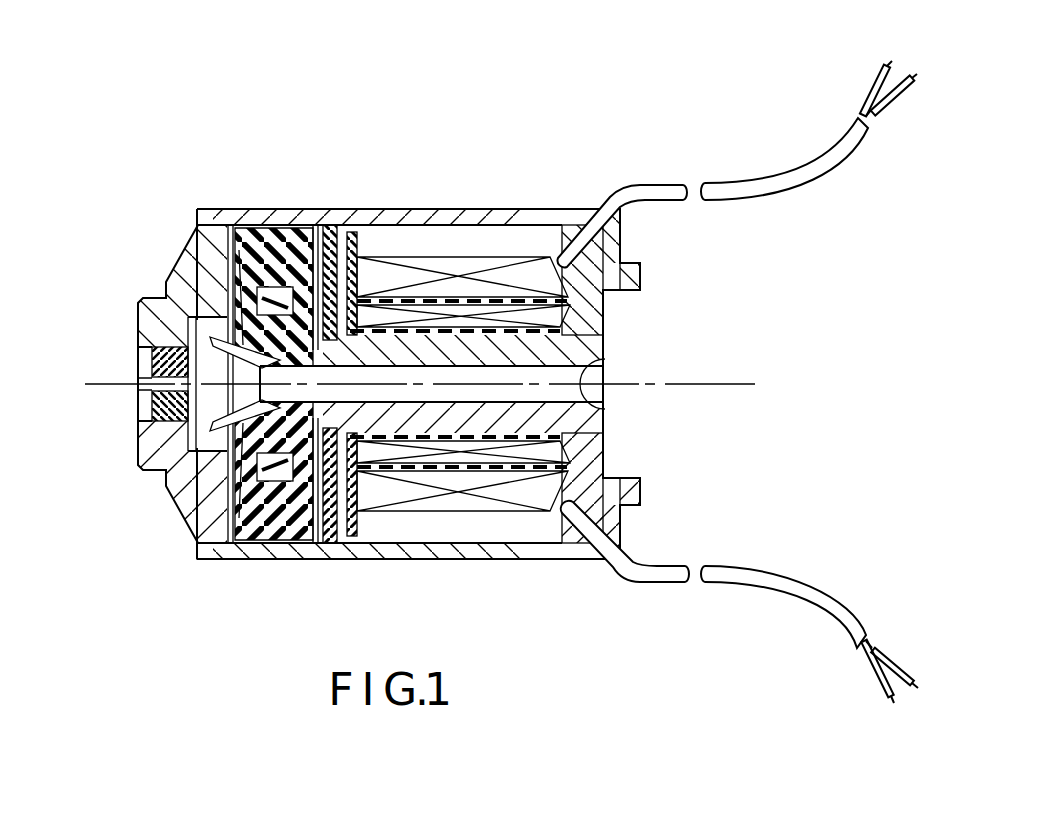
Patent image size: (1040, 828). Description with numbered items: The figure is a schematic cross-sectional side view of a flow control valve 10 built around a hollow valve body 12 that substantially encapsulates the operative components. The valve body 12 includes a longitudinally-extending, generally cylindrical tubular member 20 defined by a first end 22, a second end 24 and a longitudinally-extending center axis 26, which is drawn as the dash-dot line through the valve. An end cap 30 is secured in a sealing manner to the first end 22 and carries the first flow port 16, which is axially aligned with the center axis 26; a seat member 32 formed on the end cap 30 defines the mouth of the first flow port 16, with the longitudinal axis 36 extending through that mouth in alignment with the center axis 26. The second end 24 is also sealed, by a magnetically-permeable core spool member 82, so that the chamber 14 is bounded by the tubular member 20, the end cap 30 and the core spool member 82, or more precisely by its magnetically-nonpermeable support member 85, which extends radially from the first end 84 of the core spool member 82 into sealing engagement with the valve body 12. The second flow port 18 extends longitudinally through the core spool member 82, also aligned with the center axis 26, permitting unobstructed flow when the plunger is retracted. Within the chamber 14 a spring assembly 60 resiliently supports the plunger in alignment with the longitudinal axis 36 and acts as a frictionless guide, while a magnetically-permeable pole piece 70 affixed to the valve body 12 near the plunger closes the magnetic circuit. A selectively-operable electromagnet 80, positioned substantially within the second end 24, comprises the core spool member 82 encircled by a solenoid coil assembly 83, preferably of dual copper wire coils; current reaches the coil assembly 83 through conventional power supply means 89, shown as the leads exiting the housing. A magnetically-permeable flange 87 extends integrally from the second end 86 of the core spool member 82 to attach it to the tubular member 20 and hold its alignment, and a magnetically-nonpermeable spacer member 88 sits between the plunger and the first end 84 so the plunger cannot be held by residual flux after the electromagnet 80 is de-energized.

The flow control valve 10 is at (994, 127).
The valve body 12 is at (593, 583).
The chamber 14 is at (213, 307).
The first flow port 16 is at (138, 390).
The second flow port 18 is at (582, 398).
The tubular member 20 is at (441, 208).
The first end 22 is at (198, 208).
The second end 24 is at (592, 210).
The center axis 26 is at (742, 381).
The end cap 30 is at (135, 458).
The seat member 32 is at (138, 345).
The longitudinal axis 36 is at (103, 384).
The spring assembly 60 is at (230, 484).
The pole piece 70 is at (244, 546).
The electromagnet 80 is at (397, 247).
The core spool member 82 is at (503, 420).
The solenoid coil assembly 83 is at (467, 503).
The first end 84 is at (370, 423).
The support member 85 is at (347, 524).
The second end 86 is at (605, 347).
The flange 87 is at (623, 270).
The spacer member 88 is at (327, 226).
The power supply means 89 is at (808, 163).